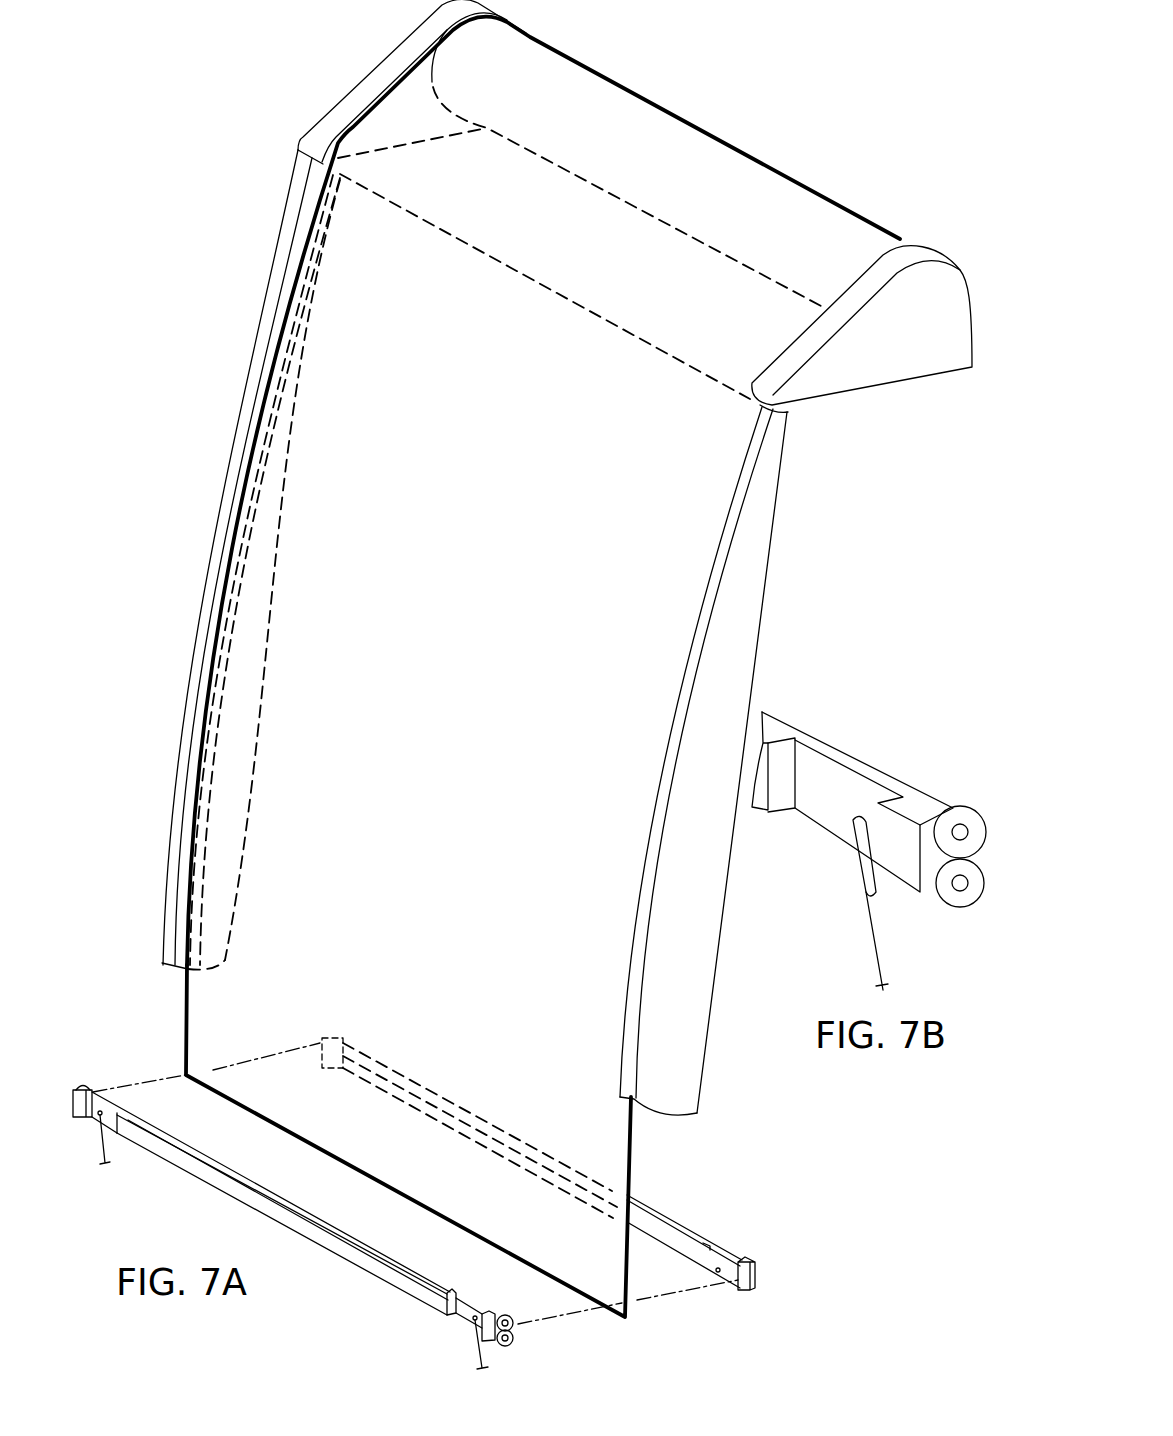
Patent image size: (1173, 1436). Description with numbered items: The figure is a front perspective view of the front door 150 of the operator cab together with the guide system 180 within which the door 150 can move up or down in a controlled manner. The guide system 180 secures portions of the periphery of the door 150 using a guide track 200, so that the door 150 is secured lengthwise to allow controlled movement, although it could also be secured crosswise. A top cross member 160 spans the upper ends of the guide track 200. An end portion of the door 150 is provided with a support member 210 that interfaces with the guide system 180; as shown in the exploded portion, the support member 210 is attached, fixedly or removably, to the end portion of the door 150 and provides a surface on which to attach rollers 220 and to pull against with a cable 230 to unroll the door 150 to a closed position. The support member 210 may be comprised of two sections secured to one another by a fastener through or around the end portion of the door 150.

In FIG. 7A, the door 150 is at (588, 1132).
In FIG. 7A, the top cross member 160 is at (950, 218).
In FIG. 7A, the guide system 180 is at (143, 553).
In FIG. 7A, the guide track 200 is at (243, 387).
In FIG. 7A, the support member 210 is at (768, 1285).
In FIG. 7B, the support member 210 is at (948, 762).
In FIG. 7A, the rollers 220 is at (512, 1337).
In FIG. 7B, the rollers 220 is at (953, 818).
In FIG. 7A, the cable 230 is at (473, 1360).
In FIG. 7B, the cable 230 is at (873, 962).